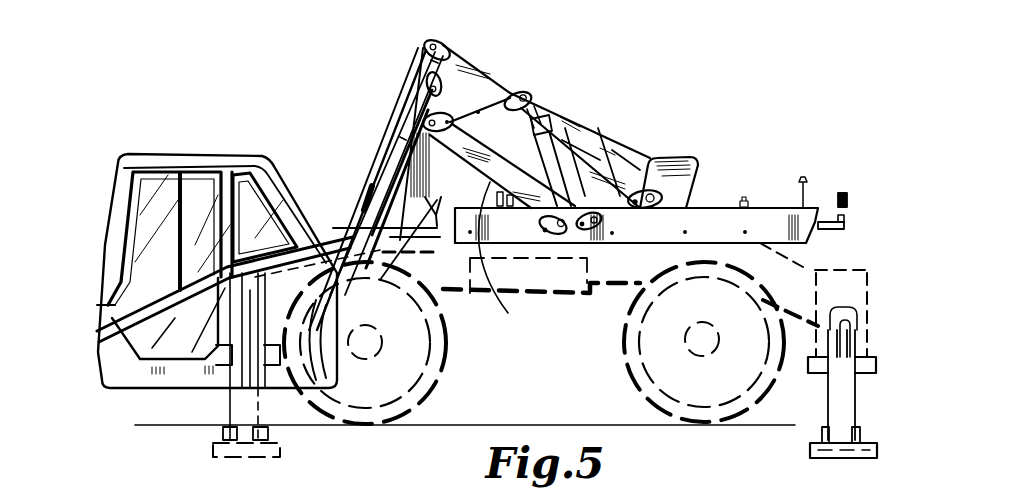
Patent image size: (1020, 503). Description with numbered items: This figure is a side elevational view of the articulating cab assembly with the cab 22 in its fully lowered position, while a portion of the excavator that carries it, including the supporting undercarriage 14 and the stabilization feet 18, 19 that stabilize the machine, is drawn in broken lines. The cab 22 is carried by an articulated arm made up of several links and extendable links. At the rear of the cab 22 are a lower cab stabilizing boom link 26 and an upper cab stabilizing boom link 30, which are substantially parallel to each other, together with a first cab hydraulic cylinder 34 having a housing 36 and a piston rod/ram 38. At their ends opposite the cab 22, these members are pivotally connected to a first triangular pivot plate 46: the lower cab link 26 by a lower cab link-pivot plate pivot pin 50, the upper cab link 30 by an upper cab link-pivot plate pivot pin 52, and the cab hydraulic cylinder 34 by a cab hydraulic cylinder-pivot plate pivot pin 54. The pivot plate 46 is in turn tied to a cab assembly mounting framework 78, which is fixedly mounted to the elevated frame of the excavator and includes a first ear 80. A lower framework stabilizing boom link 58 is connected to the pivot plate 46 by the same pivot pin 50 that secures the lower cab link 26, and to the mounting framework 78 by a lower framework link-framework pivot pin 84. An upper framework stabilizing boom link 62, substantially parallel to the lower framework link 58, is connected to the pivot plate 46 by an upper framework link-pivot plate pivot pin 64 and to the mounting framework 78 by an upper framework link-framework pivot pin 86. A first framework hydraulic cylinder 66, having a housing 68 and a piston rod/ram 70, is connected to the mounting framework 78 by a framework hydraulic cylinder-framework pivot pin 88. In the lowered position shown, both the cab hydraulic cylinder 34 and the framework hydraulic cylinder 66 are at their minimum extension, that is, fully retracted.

The supporting undercarriage 14 is at (627, 268).
The stabilization foot 18 is at (213, 448).
The stabilization foot 19 is at (810, 448).
The cab 22 is at (228, 153).
The lower cab stabilizing boom link 26 is at (445, 275).
The upper cab stabilizing boom link 30 is at (343, 217).
The first cab hydraulic cylinder 34 is at (370, 193).
The housing 36 is at (371, 160).
The piston rod/ram 38 is at (421, 103).
The first triangular pivot plate 46 is at (521, 92).
The lower cab link-pivot plate pivot pin 50 is at (519, 94).
The upper cab link-pivot plate pivot pin 52 is at (427, 41).
The cab hydraulic cylinder-pivot plate pivot pin 54 is at (442, 82).
The lower framework stabilizing boom link 58 is at (495, 263).
The upper framework stabilizing boom link 62 is at (643, 84).
The upper framework link-pivot plate pivot pin 64 is at (522, 93).
The first framework hydraulic cylinder 66 is at (592, 133).
The housing 68 is at (625, 153).
The piston rod/ram 70 is at (558, 104).
The cab assembly mounting framework 78 is at (770, 207).
The first ear 80 is at (697, 177).
The lower framework link-framework pivot pin 84 is at (558, 237).
The upper framework link-framework pivot pin 86 is at (662, 193).
The framework hydraulic cylinder-framework pivot pin 88 is at (592, 233).